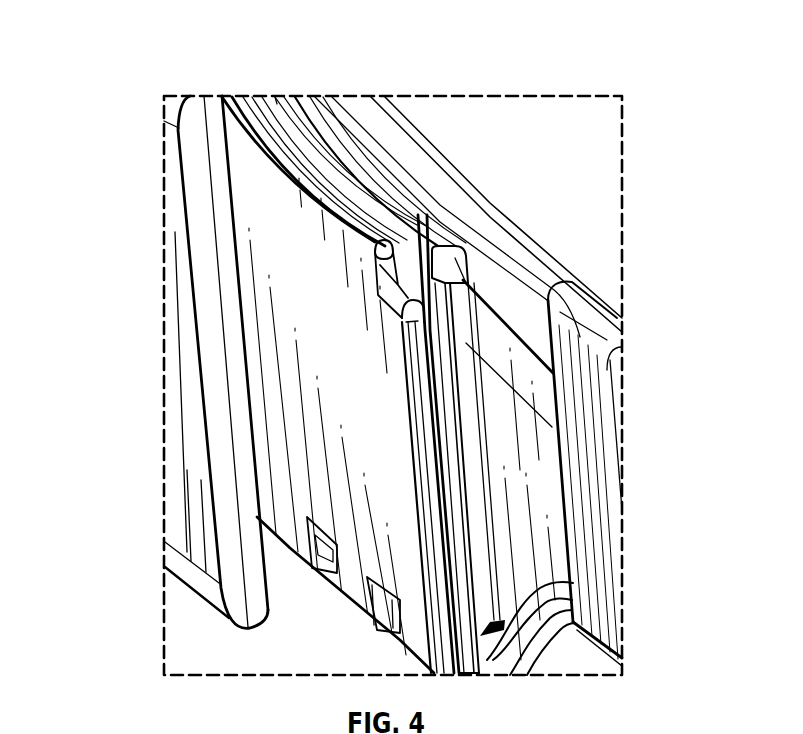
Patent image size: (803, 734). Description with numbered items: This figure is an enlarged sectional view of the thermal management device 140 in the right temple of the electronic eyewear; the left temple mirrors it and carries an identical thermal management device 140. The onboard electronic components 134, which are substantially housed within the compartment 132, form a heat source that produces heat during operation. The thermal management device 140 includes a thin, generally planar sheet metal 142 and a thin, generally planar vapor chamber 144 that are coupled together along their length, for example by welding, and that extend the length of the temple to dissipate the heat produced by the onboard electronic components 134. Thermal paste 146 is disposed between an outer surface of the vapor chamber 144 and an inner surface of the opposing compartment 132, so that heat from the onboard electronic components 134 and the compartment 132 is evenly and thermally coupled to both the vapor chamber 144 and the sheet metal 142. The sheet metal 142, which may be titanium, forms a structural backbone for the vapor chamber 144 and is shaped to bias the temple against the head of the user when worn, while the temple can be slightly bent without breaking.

The thermal management device 140 is at (133, 43).
The compartment 132 is at (178, 365).
The onboard electronic components 134 is at (249, 174).
The sheet metal 142 is at (510, 237).
The vapor chamber 144 is at (555, 485).
The thermal paste 146 is at (463, 390).